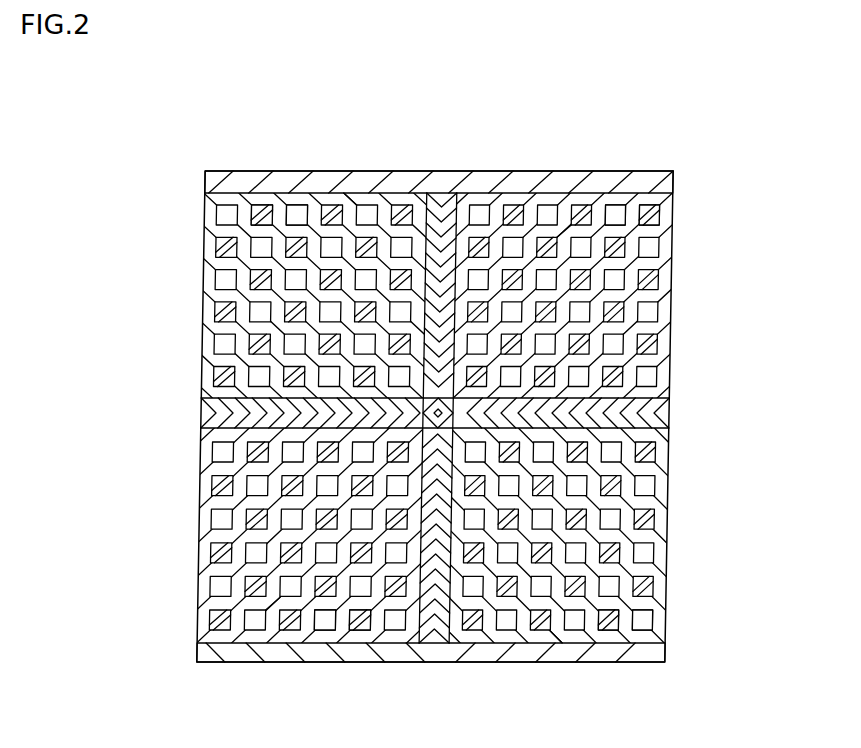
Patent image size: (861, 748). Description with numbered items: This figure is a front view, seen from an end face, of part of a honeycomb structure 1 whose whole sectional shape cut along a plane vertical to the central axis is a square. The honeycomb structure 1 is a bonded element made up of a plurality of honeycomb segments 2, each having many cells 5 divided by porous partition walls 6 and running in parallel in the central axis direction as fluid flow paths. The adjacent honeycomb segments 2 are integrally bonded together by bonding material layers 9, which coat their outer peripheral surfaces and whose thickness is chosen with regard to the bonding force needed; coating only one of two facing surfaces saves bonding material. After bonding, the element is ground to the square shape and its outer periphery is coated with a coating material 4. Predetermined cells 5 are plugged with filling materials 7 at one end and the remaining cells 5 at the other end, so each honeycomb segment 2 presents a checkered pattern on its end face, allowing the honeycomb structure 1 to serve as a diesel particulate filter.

The honeycomb structure 1 is at (355, 113).
The honeycomb segment 2 is at (185, 261).
The coating material 4 is at (520, 185).
The cell 5 is at (299, 213).
The partition wall 6 is at (351, 215).
The filling material 7 is at (263, 207).
The bonding material layer 9 is at (450, 205).